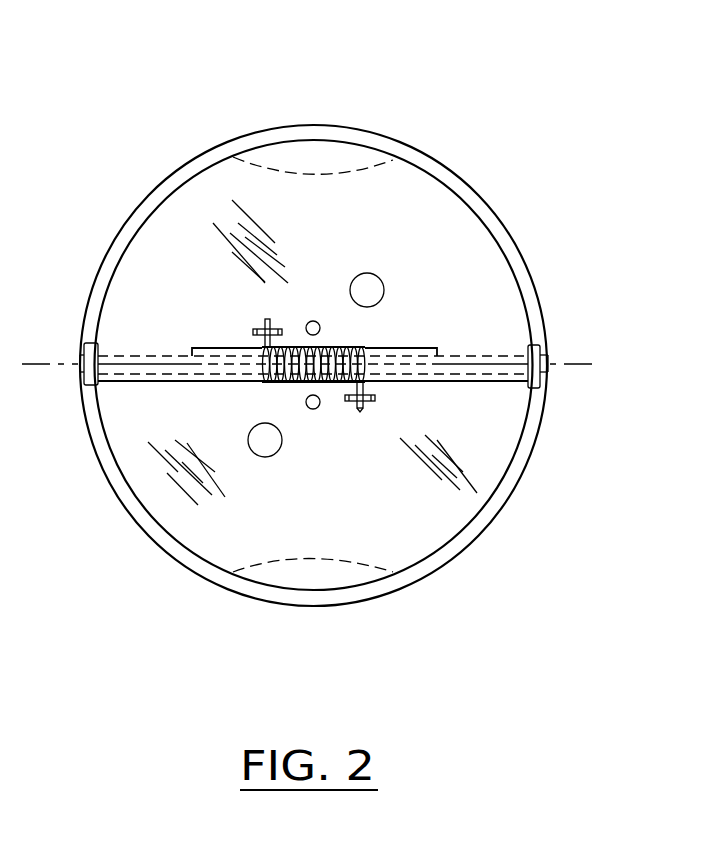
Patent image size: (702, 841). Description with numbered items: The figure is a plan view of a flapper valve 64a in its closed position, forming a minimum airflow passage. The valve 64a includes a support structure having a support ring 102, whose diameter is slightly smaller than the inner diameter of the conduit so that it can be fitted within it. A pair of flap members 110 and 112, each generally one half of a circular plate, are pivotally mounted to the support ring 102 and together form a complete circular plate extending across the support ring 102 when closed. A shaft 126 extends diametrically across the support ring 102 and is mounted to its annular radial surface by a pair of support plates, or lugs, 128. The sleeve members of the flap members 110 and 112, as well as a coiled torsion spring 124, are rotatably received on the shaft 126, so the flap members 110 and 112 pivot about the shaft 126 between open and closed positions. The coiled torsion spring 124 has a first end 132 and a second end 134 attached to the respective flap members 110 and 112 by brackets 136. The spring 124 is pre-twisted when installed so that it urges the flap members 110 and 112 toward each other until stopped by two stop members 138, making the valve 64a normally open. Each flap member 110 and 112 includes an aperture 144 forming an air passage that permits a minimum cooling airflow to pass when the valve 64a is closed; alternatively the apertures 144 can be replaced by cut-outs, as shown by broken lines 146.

The flapper valve 64a is at (453, 108).
The support ring 102 is at (467, 183).
The flap member 110 is at (205, 276).
The flap member 112 is at (350, 536).
The coiled torsion spring 124 is at (335, 347).
The shaft 126 is at (490, 356).
The support plates 128 is at (536, 388).
The first end 132 is at (268, 318).
The second end 134 is at (360, 412).
The bracket 136 is at (253, 332).
The stop members 138 is at (313, 409).
The aperture 144 is at (380, 278).
The cut-outs 146 is at (284, 172).